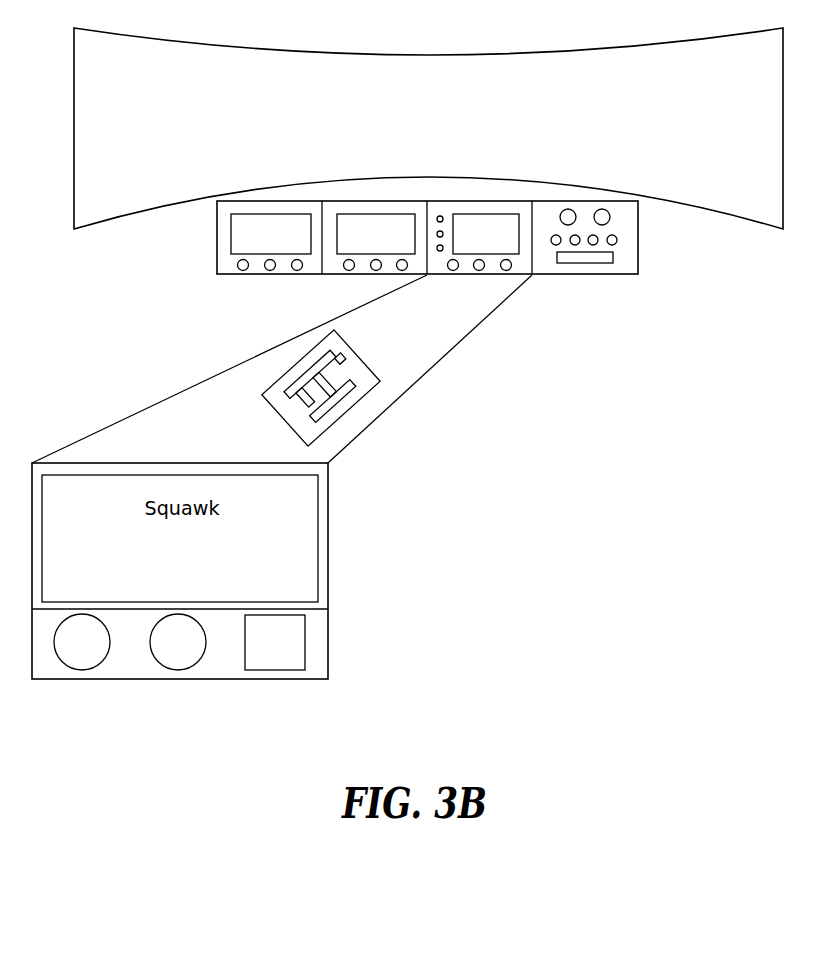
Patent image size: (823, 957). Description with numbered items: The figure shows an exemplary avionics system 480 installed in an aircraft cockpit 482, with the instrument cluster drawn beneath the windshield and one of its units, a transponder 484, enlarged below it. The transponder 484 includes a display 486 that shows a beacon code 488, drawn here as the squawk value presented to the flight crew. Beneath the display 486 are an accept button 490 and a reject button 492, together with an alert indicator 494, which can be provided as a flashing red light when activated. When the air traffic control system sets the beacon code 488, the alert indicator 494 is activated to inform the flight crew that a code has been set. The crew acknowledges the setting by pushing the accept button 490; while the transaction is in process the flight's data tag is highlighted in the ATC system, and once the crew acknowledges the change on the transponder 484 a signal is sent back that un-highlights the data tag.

The avionics system 480 is at (404, 270).
The aircraft cockpit 482 is at (664, 329).
The transponder 484 is at (470, 246).
The display 486 is at (97, 515).
The beacon code 488 is at (212, 527).
The accept button 490 is at (80, 670).
The reject button 492 is at (175, 670).
The alert indicator 494 is at (258, 653).